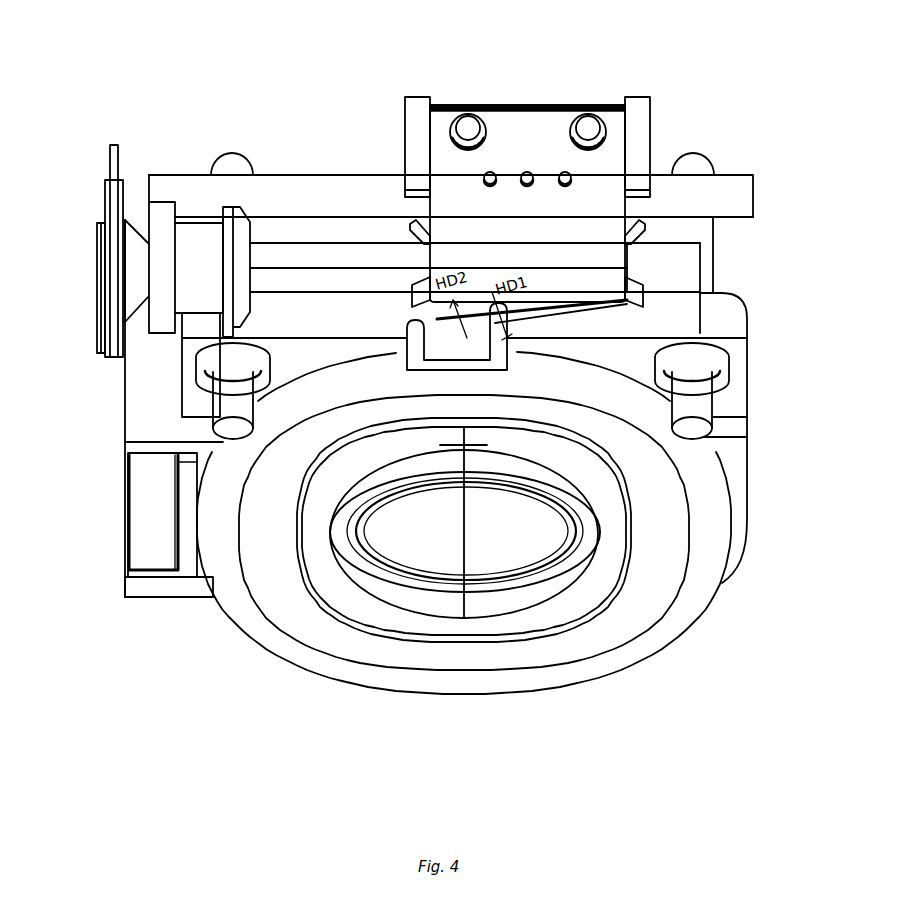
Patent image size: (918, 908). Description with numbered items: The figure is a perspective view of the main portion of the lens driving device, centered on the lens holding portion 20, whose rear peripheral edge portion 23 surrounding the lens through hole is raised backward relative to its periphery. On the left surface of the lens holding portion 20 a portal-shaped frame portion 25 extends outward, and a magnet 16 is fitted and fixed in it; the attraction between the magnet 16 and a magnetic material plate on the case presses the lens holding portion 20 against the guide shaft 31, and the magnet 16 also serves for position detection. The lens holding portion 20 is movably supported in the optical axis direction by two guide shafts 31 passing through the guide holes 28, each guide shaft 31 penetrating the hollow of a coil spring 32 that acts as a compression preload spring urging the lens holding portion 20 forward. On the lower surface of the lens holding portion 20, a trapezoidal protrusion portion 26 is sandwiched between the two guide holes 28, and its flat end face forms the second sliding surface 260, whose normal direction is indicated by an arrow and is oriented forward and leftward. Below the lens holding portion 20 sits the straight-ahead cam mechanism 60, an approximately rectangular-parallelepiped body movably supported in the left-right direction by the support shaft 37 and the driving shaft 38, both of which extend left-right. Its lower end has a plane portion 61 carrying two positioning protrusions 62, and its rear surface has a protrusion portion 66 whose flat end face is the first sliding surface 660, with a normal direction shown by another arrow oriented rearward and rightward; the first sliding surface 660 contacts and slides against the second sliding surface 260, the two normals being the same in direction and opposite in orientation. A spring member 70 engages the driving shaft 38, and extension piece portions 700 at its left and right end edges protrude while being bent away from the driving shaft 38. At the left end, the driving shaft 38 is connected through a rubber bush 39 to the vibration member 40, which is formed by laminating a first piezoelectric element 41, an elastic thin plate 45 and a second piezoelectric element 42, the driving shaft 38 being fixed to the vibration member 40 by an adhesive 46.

The vibration member 40 is at (170, 60).
The first piezoelectric element 41 is at (101, 222).
The elastic thin plate 45 is at (114, 145).
The second piezoelectric element 42 is at (133, 218).
The adhesive 46 is at (195, 222).
The rubber bush 39 is at (187, 205).
The driving shaft 38 is at (260, 268).
The support shaft 37 is at (295, 193).
The second sliding surface 260 is at (437, 320).
The protrusion portion 26 is at (413, 258).
The extension piece portions 700 is at (412, 300).
The spring member 70 is at (598, 168).
The plane portion 61 is at (458, 176).
The positioning protrusions 62 is at (590, 108).
The straight-ahead cam mechanism 60 is at (527, 166).
The first sliding surface 660 is at (700, 331).
The protrusion portion 66 is at (635, 333).
The coil spring 32 is at (217, 358).
The guide holes 28 is at (207, 385).
The guide shafts 31 is at (223, 440).
The magnet 16 is at (133, 540).
The frame portion 25 is at (162, 591).
The peripheral edge portion 23 is at (440, 687).
The lens holding portion 20 is at (442, 492).